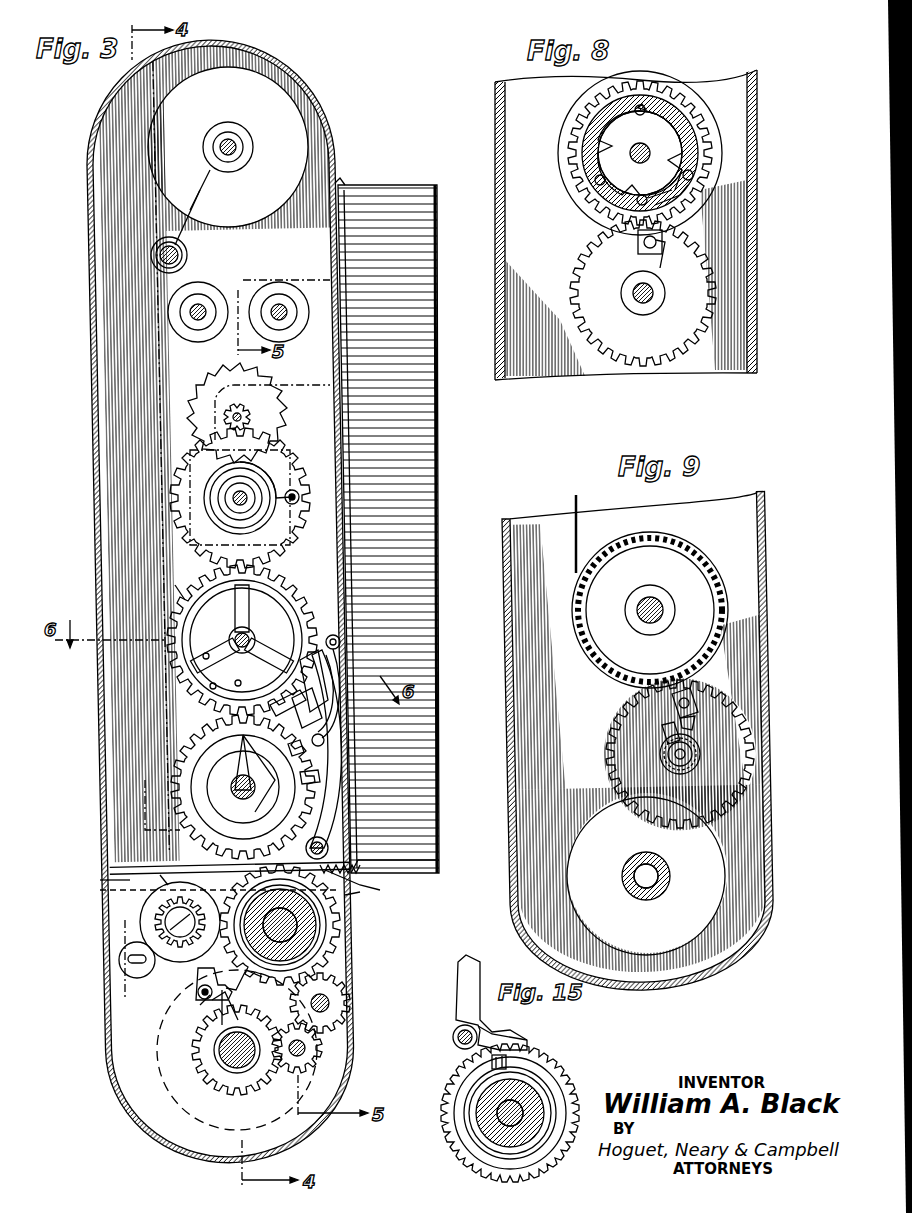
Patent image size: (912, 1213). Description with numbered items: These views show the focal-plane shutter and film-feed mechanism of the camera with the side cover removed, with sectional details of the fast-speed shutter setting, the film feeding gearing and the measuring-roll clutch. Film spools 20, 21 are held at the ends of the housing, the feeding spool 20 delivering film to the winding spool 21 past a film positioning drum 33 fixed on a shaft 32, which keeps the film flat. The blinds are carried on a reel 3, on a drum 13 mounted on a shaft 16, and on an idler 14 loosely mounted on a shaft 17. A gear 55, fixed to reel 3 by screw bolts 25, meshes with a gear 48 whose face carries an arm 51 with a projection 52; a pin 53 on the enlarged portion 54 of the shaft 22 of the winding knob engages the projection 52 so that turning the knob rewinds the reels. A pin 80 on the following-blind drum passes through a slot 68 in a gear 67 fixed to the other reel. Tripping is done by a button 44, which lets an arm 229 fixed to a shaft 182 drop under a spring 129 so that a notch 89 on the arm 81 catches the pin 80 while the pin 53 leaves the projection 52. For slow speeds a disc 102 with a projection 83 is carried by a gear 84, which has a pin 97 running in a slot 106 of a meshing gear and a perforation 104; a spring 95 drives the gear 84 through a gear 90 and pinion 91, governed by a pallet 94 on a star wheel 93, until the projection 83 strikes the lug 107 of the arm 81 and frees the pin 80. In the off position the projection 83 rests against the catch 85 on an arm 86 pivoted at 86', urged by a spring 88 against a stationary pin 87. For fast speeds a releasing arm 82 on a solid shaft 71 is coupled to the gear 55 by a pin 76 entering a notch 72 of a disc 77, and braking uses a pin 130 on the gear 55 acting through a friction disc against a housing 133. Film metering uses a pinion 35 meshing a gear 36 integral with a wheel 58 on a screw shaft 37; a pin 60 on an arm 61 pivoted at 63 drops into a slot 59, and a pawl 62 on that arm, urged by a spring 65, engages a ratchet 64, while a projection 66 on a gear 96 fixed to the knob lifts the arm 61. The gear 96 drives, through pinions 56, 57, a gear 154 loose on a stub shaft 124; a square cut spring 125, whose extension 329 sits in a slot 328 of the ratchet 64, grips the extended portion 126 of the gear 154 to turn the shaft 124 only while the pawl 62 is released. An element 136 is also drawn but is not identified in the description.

In FIG. 8, the reel 3 is at (712, 132).
In FIG. 9, the reel 3 is at (700, 572).
In FIG. 3, the drum 13 is at (279, 300).
In FIG. 3, the idler 14 is at (205, 306).
In FIG. 3, the shaft 16 is at (284, 310).
In FIG. 3, the shaft 17 is at (200, 305).
In FIG. 3, the film spool 20 is at (290, 122).
In FIG. 3, the film spool 21 is at (165, 1082).
In FIG. 9, the film spool 21 is at (692, 868).
In FIG. 3, the shaft 22 is at (346, 927).
In FIG. 9, the shaft 22 is at (668, 760).
In FIG. 8, the screw bolts 25 is at (696, 168).
In FIG. 3, the shaft 32 is at (160, 258).
In FIG. 3, the film positioning drum 33 is at (183, 252).
In FIG. 3, the pinion 35 is at (150, 410).
In FIG. 3, the gear 36 is at (100, 877).
In FIG. 3, the screw shaft 37 is at (150, 922).
In FIG. 3, the button 44 is at (312, 950).
In FIG. 8, the gear 48 is at (692, 292).
In FIG. 9, the gear 48 is at (728, 722).
In FIG. 8, the arm 51 is at (665, 238).
In FIG. 9, the arm 51 is at (697, 700).
In FIG. 8, the projection 52 is at (666, 252).
In FIG. 9, the projection 52 is at (705, 718).
In FIG. 9, the pin 53 is at (664, 718).
In FIG. 9, the enlarged portion 54 is at (660, 748).
In FIG. 8, the gear 55 is at (700, 110).
In FIG. 9, the gear 55 is at (712, 592).
In FIG. 3, the pinion 56 is at (318, 1050).
In FIG. 3, the pinion 57 is at (338, 1011).
In FIG. 3, the wheel 58 is at (170, 888).
In FIG. 3, the slot 59 is at (148, 950).
In FIG. 3, the pin 60 is at (190, 905).
In FIG. 3, the arm 61 is at (195, 978).
In FIG. 15, the arm 61 is at (465, 990).
In FIG. 3, the pawl 62 is at (214, 1022).
In FIG. 15, the pawl 62 is at (505, 1034).
In FIG. 3, the pivot 63 is at (205, 1000).
In FIG. 15, the pivot 63 is at (458, 1044).
In FIG. 3, the ratchet wheel 64 is at (226, 1092).
In FIG. 15, the ratchet wheel 64 is at (530, 1062).
In FIG. 3, the spring 65 is at (200, 992).
In FIG. 15, the spring 65 is at (455, 1032).
In FIG. 3, the projection 66 is at (300, 970).
In FIG. 3, the gear 67 is at (175, 762).
In FIG. 3, the slot 68 is at (195, 780).
In FIG. 8, the shaft 71 is at (662, 152).
In FIG. 8, the notches 72 is at (600, 132).
In FIG. 8, the pin 76 is at (640, 112).
In FIG. 8, the disc 77 is at (655, 120).
In FIG. 3, the pin 80 is at (362, 752).
In FIG. 3, the arm 81 is at (330, 802).
In FIG. 3, the releasing arm 82 is at (215, 742).
In FIG. 3, the projection 83 is at (318, 662).
In FIG. 3, the gear 84 is at (285, 588).
In FIG. 3, the projection 85 is at (318, 686).
In FIG. 3, the arm 86 is at (351, 679).
In FIG. 3, the pivot 86' is at (353, 628).
In FIG. 3, the stationary pin 87 is at (335, 745).
In FIG. 3, the spring 88 is at (340, 718).
In FIG. 3, the notch 89 is at (325, 776).
In FIG. 3, the gear 90 is at (310, 503).
In FIG. 3, the pinion 91 is at (250, 415).
In FIG. 3, the star wheel 93 is at (262, 380).
In FIG. 3, the pallet 94 is at (294, 489).
In FIG. 3, the spring 95 is at (270, 465).
In FIG. 3, the gear 96 is at (322, 946).
In FIG. 3, the pin 97 is at (185, 600).
In FIG. 3, the disc 102 is at (292, 602).
In FIG. 3, the perforation 104 is at (241, 683).
In FIG. 3, the slot 106 is at (262, 598).
In FIG. 3, the projection 107 is at (343, 734).
In FIG. 15, the stub shaft 124 is at (560, 1088).
In FIG. 15, the square cut spring 125 is at (466, 1106).
In FIG. 15, the extended portion 126 is at (488, 1120).
In FIG. 3, the spring 129 is at (342, 881).
In FIG. 8, the pin 130 is at (690, 192).
In FIG. 8, the housing 133 is at (700, 212).
In FIG. 3, the guide 136 is at (346, 896).
In FIG. 3, the gear 154 is at (217, 1072).
In FIG. 3, the shaft 182 is at (326, 845).
In FIG. 3, the arm 229 is at (140, 850).
In FIG. 15, the slot 328 is at (508, 1064).
In FIG. 15, the extension 329 is at (502, 1058).